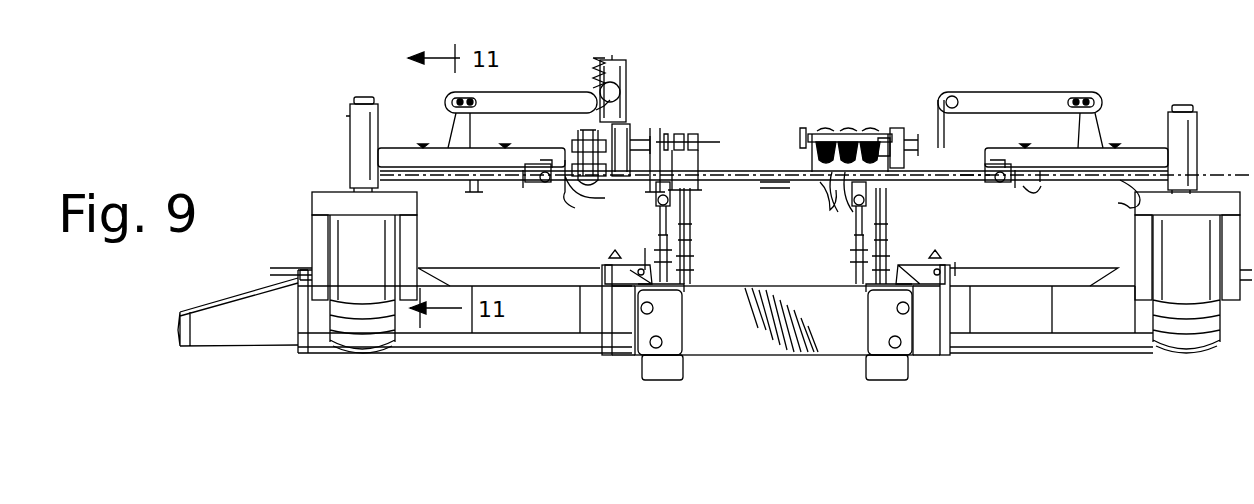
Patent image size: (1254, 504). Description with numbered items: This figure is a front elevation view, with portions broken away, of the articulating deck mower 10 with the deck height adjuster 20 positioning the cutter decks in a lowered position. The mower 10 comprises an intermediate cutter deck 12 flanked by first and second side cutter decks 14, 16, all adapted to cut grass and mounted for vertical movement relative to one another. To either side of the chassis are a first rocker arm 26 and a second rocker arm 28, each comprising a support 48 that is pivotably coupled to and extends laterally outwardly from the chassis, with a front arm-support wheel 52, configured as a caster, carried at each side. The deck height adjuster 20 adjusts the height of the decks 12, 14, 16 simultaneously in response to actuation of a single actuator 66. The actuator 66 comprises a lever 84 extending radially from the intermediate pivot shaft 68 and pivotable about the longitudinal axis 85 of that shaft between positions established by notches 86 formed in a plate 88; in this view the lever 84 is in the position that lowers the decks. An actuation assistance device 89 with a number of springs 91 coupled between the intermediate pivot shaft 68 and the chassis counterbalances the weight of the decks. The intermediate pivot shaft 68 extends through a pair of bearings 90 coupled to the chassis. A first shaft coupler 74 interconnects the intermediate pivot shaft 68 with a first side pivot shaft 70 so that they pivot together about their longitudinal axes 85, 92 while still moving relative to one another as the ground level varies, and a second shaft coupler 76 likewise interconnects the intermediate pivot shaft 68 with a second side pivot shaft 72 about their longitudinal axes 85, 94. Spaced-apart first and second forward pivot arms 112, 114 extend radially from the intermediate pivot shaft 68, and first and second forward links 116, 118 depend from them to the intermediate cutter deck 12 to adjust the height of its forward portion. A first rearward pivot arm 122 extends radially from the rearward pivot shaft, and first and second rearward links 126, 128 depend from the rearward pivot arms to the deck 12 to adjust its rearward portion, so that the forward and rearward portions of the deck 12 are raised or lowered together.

The articulating deck mower 10 is at (293, 100).
The intermediate cutter deck 12 is at (710, 312).
The first side cutter deck 14 is at (535, 300).
The second side cutter deck 16 is at (1033, 303).
The deck height adjuster 20 is at (718, 112).
The first rocker arm 26 is at (398, 138).
The second rocker arm 28 is at (1148, 144).
The support 48 is at (487, 162).
The front arm-support wheel 52 is at (386, 346).
The actuator 66 is at (626, 113).
The intermediate pivot shaft 68 is at (773, 182).
The first side pivot shaft 70 is at (464, 180).
The second side pivot shaft 72 is at (1088, 180).
The first shaft coupler 74 is at (556, 182).
The second shaft coupler 76 is at (1016, 180).
The lever 84 is at (638, 100).
The longitudinal axis 85 is at (784, 171).
The notches 86 is at (607, 56).
The plate 88 is at (586, 88).
The actuation assistance device 89 is at (845, 120).
The bearings 90 is at (606, 194).
The springs 91 is at (843, 184).
The longitudinal axis 92 is at (478, 182).
The longitudinal axis 94 is at (1128, 180).
The first forward pivot arm 112 is at (641, 148).
The second forward pivot arm 114 is at (894, 162).
The first forward link 116 is at (649, 244).
The second forward link 118 is at (894, 210).
The first rearward pivot arm 122 is at (688, 140).
The first rearward link 126 is at (696, 244).
The second rearward link 128 is at (860, 240).